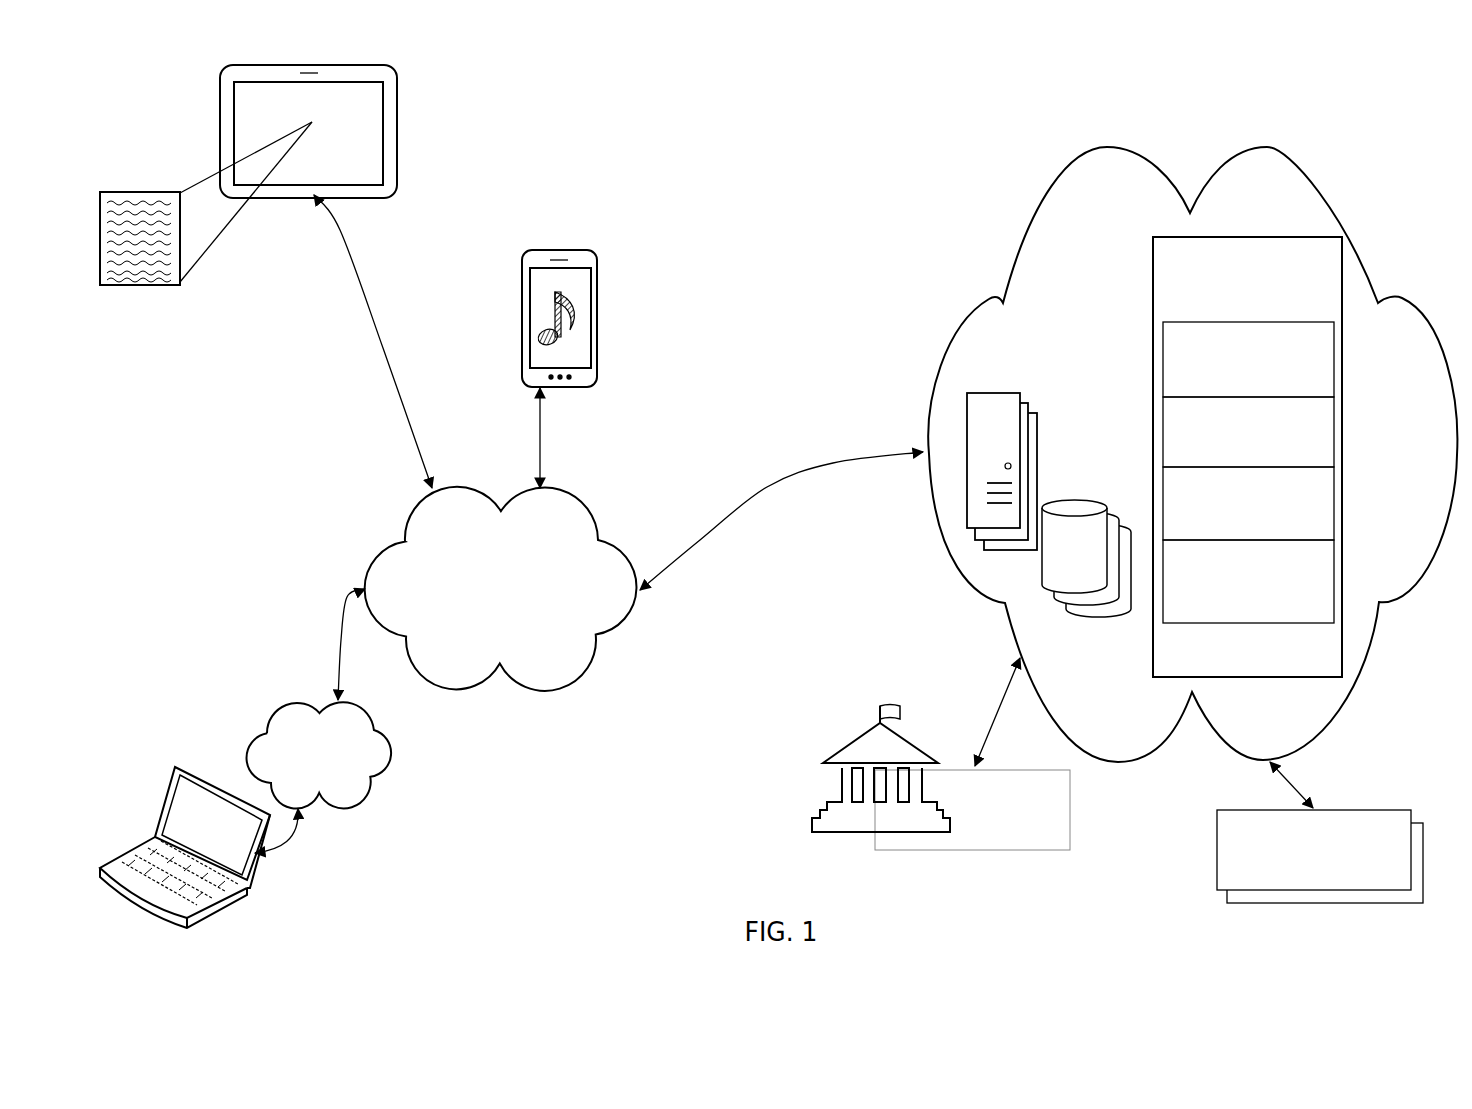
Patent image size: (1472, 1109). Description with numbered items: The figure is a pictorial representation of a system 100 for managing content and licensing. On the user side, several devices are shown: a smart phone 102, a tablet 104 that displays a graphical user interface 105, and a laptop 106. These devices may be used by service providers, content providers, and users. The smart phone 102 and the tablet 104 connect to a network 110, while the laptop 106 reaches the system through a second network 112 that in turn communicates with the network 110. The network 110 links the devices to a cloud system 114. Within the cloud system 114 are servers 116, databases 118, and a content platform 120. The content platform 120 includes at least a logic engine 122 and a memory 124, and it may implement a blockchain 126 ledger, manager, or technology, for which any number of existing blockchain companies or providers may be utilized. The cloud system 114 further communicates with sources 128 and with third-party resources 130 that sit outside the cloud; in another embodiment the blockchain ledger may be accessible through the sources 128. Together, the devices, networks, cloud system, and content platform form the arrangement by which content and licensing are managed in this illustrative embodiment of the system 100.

The system 100 is at (282, 334).
The smart phone 102 is at (598, 312).
The tablet 104 is at (397, 128).
The graphical user interface 105 is at (160, 188).
The laptop 106 is at (208, 790).
The network 110 is at (586, 524).
The network 112 is at (383, 780).
The cloud system 114 is at (1005, 260).
The servers 116 is at (994, 390).
The databases 118 is at (1074, 498).
The content platform 120 is at (1232, 310).
The logic engine 122 is at (1232, 381).
The memory 124 is at (1232, 450).
The blockchain 126 is at (1232, 526).
The sources 128 is at (1060, 826).
The third-party resources 130 is at (1402, 870).